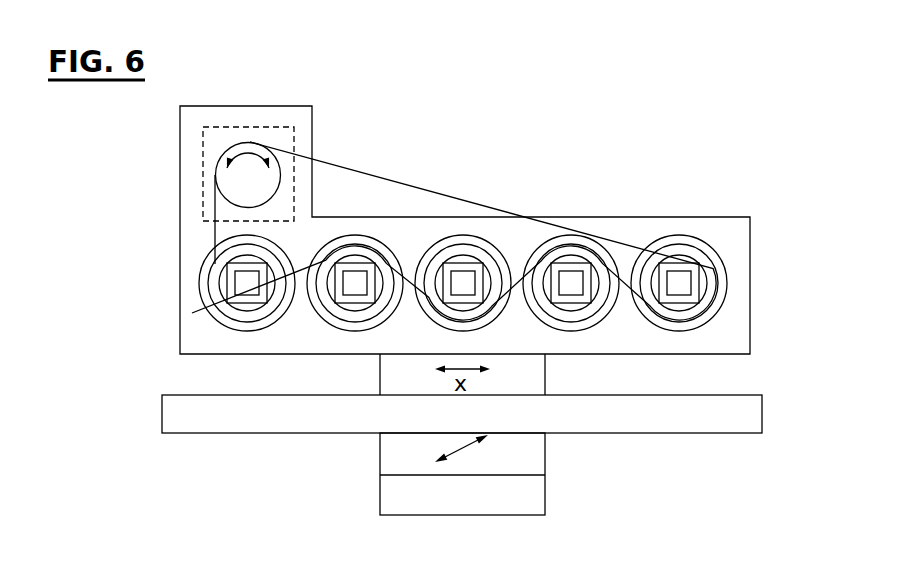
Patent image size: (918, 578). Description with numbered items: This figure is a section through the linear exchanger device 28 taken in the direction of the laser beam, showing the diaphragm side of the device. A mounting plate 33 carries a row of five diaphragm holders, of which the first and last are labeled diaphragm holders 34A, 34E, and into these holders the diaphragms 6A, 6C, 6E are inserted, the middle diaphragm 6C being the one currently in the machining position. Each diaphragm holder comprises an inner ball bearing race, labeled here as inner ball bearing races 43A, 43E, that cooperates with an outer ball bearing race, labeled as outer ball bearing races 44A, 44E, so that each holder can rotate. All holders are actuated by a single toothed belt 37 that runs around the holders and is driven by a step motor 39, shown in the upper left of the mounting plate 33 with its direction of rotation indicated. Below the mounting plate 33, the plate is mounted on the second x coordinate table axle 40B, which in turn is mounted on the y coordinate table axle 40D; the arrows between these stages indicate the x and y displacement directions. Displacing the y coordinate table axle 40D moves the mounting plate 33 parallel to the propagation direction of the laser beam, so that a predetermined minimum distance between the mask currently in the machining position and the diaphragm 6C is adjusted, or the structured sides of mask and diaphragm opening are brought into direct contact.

The linear exchanger device 28 is at (624, 78).
The mounting plate 33 is at (515, 248).
The diaphragm holder 34A is at (176, 267).
The diaphragm holder 34E is at (749, 262).
The toothed belt 37 is at (454, 193).
The step motor 39 is at (248, 119).
The second x coordinate table axle 40B is at (462, 463).
The y coordinate table axle 40D is at (537, 484).
The inner ball bearing race 43A is at (166, 284).
The inner ball bearing race 43E is at (683, 209).
The outer ball bearing race 44A is at (172, 300).
The outer ball bearing race 44E is at (719, 215).
The diaphragm 6A is at (171, 218).
The diaphragm 6C is at (483, 217).
The diaphragm 6E is at (753, 297).